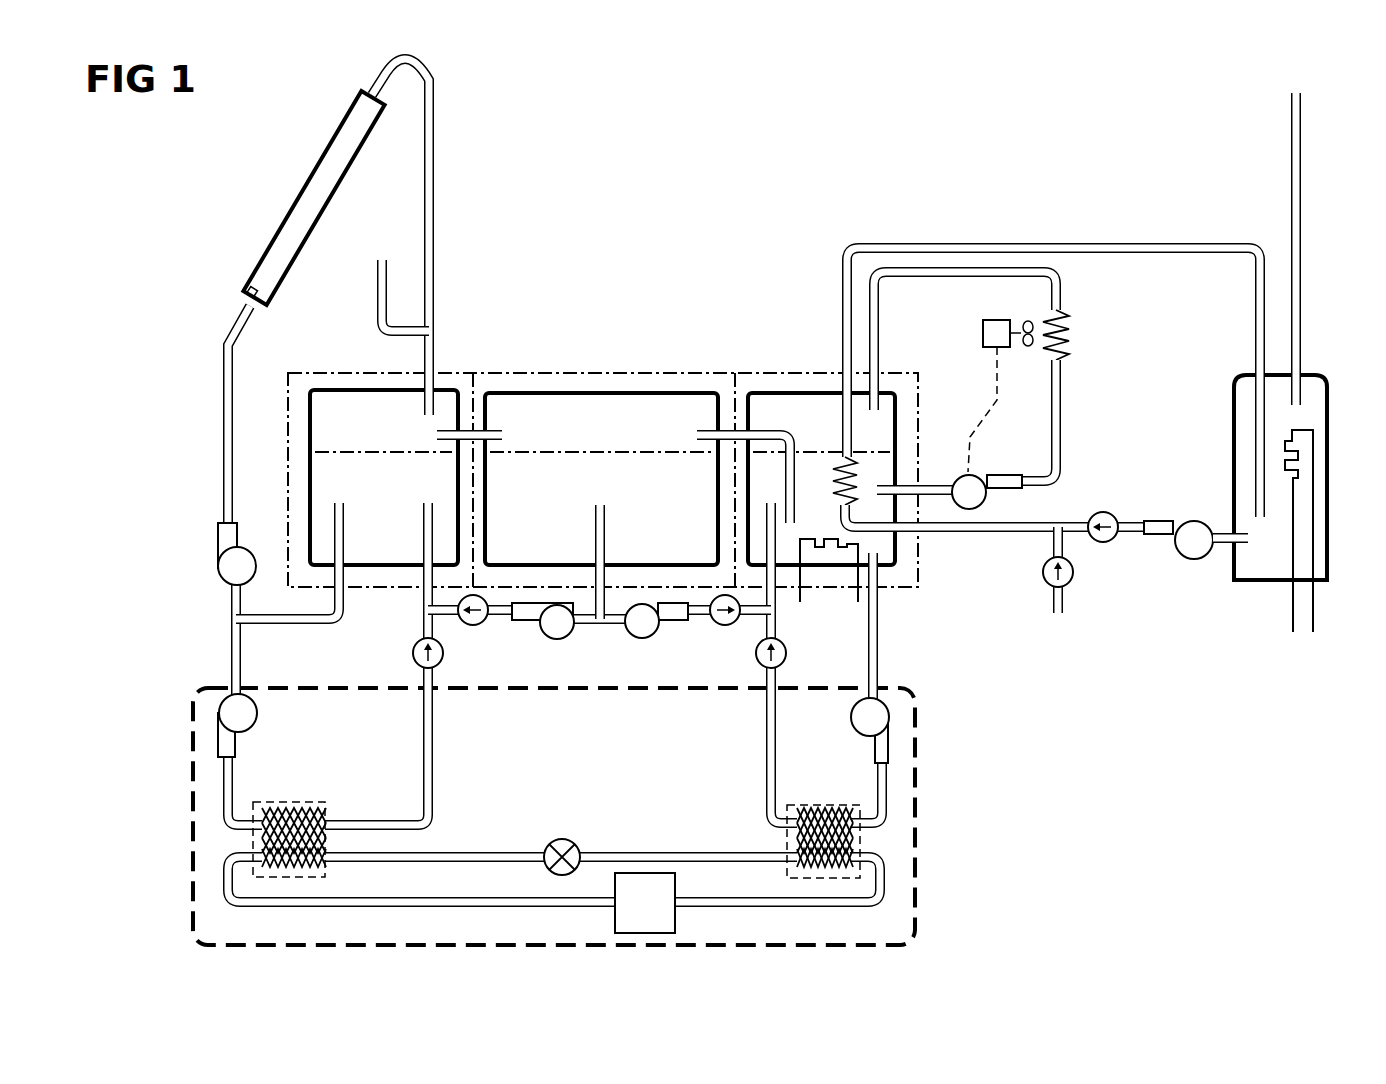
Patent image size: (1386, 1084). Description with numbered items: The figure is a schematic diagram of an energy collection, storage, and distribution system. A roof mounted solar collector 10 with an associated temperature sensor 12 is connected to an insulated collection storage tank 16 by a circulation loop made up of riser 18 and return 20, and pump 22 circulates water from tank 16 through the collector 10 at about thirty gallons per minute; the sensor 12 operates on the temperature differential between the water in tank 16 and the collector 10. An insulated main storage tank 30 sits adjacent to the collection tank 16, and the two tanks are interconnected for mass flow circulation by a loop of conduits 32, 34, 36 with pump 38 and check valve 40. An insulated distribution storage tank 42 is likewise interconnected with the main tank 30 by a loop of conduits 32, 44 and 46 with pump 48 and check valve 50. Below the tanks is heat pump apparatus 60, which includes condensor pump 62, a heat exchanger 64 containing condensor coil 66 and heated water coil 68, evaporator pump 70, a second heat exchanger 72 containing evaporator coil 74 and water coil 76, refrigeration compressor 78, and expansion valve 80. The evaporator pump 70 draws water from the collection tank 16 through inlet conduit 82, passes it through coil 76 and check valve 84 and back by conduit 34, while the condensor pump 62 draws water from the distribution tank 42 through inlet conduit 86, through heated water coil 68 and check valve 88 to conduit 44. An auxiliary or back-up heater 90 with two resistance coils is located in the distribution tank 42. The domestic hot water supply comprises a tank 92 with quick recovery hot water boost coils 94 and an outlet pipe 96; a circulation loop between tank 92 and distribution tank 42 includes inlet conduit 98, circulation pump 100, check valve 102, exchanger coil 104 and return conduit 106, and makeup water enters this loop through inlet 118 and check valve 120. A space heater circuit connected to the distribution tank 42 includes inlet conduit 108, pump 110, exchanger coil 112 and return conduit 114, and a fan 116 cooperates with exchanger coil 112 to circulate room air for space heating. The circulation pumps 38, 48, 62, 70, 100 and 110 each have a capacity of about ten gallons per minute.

The solar collector 10 is at (314, 163).
The temperature sensor 12 is at (240, 281).
The collection storage tank 16 is at (341, 383).
The riser 18 is at (222, 406).
The return 20 is at (436, 214).
The pump 22 is at (218, 574).
The main storage tank 30 is at (594, 383).
The conduit 32 is at (605, 507).
The conduit 34 is at (424, 503).
The conduit 36 is at (497, 432).
The pump 38 is at (561, 640).
The check valve 40 is at (473, 627).
The distribution storage tank 42 is at (794, 383).
The conduit 44 is at (770, 505).
The conduit 46 is at (702, 432).
The pump 48 is at (645, 639).
The check valve 50 is at (722, 627).
The heat pump apparatus 60 is at (922, 839).
The condensor pump 62 is at (888, 727).
The heat exchanger 64 is at (837, 805).
The condensor coil 66 is at (798, 862).
The heated water coil 68 is at (815, 813).
The evaporator pump 70 is at (218, 717).
The second heat exchanger 72 is at (283, 802).
The evaporator coil 74 is at (308, 863).
The water coil 76 is at (298, 817).
The refrigeration compressor 78 is at (615, 917).
The expansion valve 80 is at (571, 838).
The inlet conduit 82 is at (342, 597).
The check valve 84 is at (411, 654).
The inlet conduit 86 is at (880, 606).
The check valve 88 is at (787, 655).
The auxiliary heater 90 is at (828, 556).
The domestic hot water tank 92 is at (1224, 447).
The hot water boost coils 94 is at (1300, 454).
The outlet pipe 96 is at (1300, 300).
The inlet conduit 98 is at (1225, 546).
The circulation pump 100 is at (1183, 555).
The check valve 102 is at (1103, 512).
The exchanger coil 104 is at (838, 465).
The return conduit 106 is at (1165, 245).
The inlet conduit 108 is at (896, 488).
The pump 110 is at (979, 477).
The exchanger coil 112 is at (1072, 312).
The return conduit 114 is at (926, 273).
The fan 116 is at (1000, 320).
The inlet 118 is at (1063, 603).
The check valve 120 is at (1043, 572).